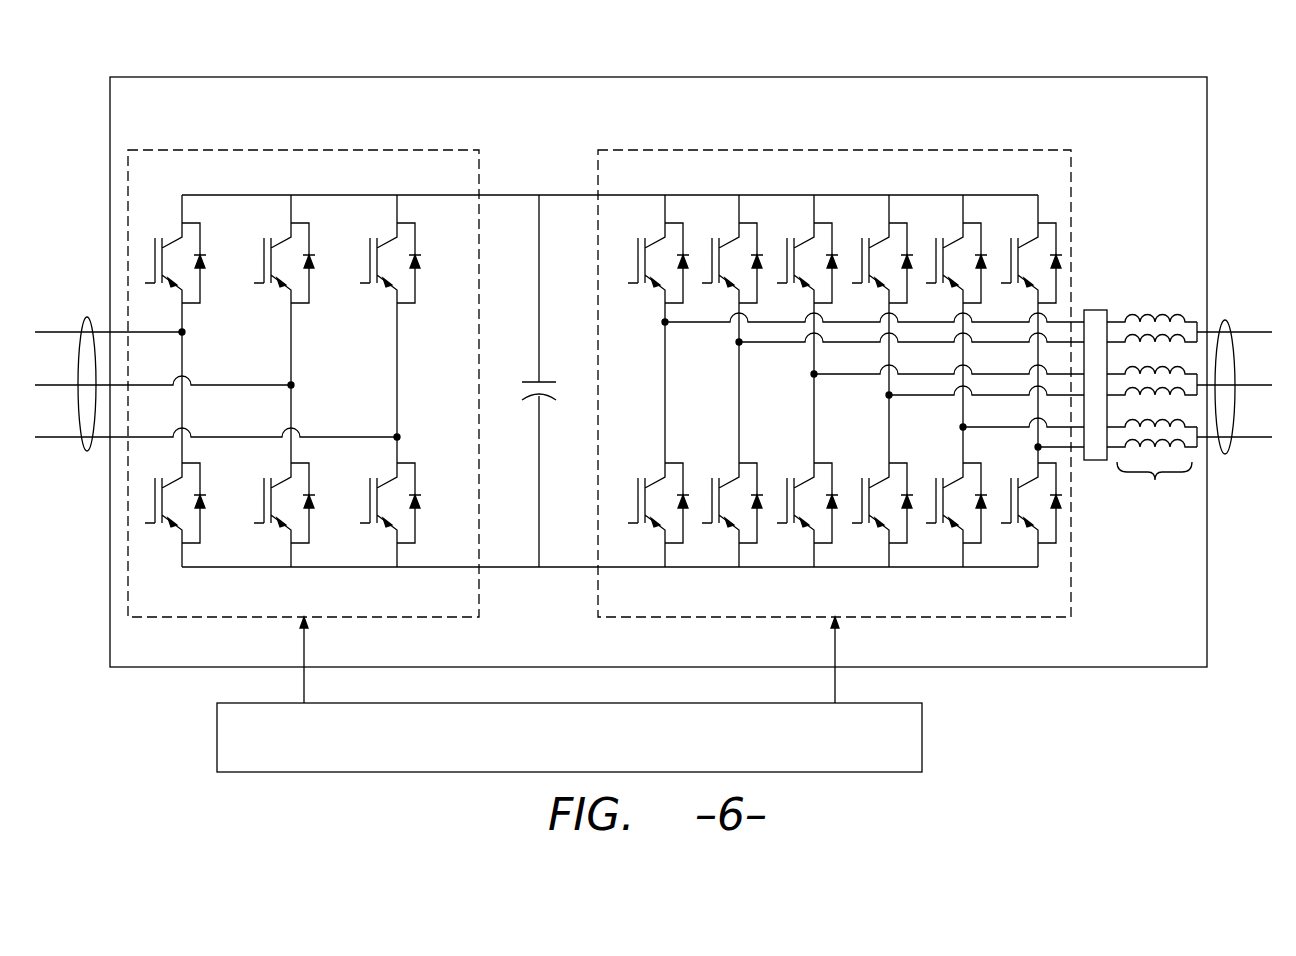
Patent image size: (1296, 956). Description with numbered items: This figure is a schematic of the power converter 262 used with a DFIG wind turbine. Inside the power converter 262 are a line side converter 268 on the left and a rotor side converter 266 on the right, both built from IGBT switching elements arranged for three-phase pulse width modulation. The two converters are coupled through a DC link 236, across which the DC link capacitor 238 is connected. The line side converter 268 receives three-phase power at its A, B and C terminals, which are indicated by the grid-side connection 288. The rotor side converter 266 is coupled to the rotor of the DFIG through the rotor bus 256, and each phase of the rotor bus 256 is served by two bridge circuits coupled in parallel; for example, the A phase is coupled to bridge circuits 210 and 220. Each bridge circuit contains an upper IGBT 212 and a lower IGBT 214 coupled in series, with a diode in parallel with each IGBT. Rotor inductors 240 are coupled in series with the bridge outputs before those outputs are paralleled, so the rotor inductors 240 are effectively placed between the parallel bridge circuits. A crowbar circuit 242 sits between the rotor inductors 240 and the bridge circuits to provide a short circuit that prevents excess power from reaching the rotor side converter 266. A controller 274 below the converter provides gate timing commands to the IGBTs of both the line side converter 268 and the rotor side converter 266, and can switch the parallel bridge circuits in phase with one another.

The power converter 262 is at (624, 77).
The line side converter 268 is at (327, 150).
The rotor side converter 266 is at (841, 358).
The DC link bus 236 is at (500, 195).
The DC link capacitor 238 is at (541, 381).
The bridge circuit 210 is at (848, 335).
The bridge circuit 220 is at (743, 205).
The upper IGBT 212 is at (637, 280).
The lower IGBT 214 is at (635, 500).
The crowbar circuit 242 is at (1095, 310).
The rotor inductors 240 is at (1152, 414).
The rotor bus 256 is at (1228, 318).
The grid connection 288 is at (87, 320).
The controller 274 is at (925, 743).